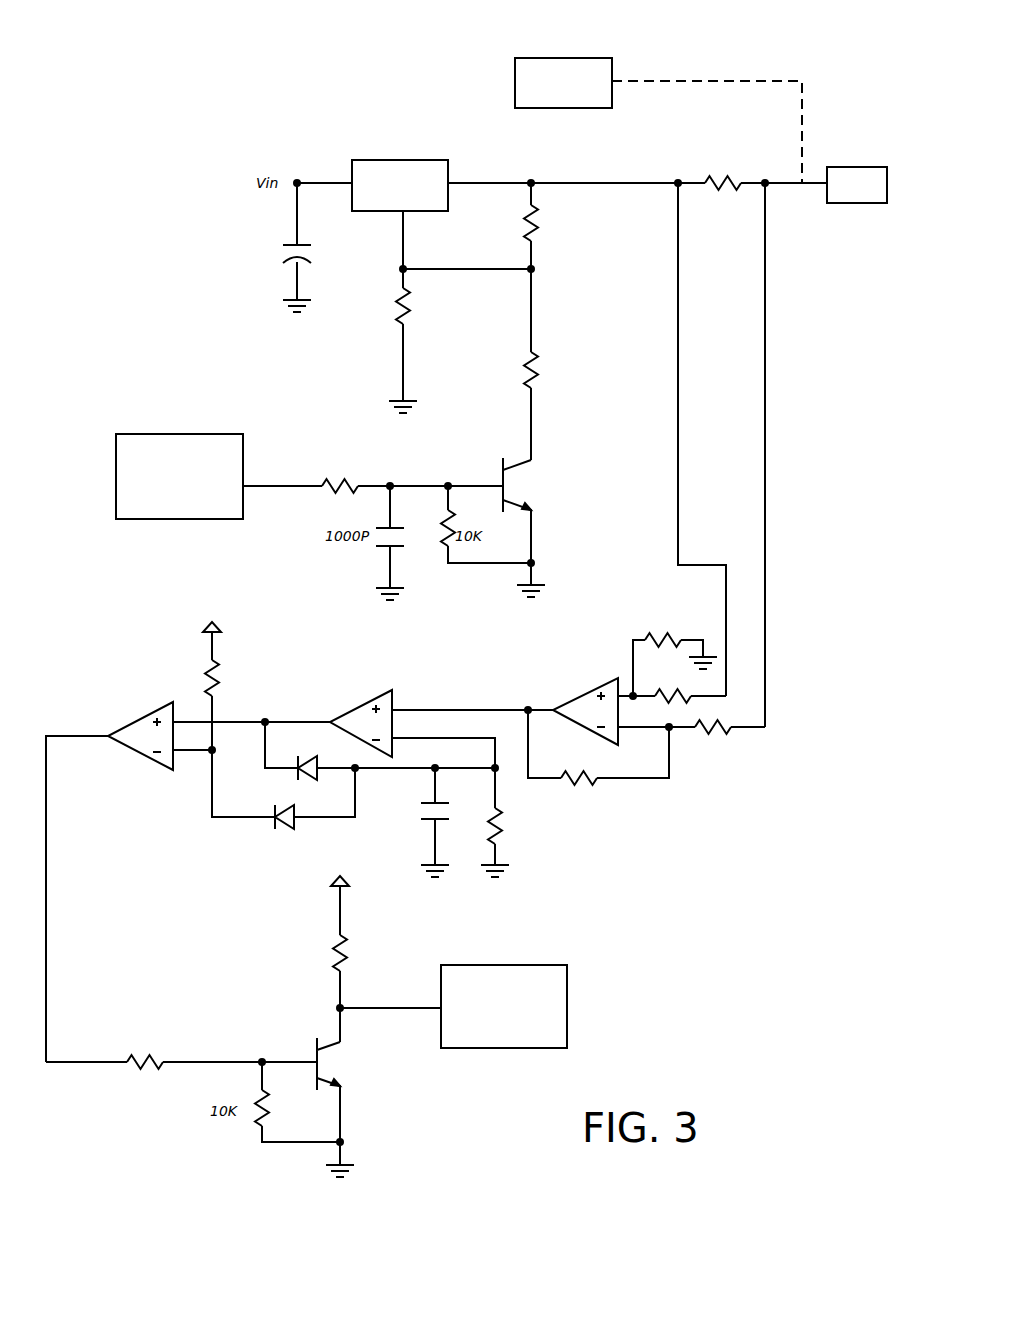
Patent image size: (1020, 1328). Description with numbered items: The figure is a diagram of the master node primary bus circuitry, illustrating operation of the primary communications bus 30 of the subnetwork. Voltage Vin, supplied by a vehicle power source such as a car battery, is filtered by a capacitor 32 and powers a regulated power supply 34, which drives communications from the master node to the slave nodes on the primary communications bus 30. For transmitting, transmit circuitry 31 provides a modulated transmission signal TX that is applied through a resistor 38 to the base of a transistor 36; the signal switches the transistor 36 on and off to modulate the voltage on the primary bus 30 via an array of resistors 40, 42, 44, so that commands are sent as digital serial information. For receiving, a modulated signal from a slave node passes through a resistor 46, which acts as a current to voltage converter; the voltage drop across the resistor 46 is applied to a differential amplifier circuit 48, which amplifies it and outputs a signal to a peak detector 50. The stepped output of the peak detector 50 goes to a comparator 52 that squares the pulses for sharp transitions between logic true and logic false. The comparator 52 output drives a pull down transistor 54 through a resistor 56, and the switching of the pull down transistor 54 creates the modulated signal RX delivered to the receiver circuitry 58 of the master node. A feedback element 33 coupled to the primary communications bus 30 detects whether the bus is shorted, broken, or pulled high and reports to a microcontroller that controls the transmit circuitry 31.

The primary communications bus/wire 30 is at (850, 162).
The transmit circuitry 31 is at (178, 520).
The capacitor 32 is at (313, 256).
The feedback element 33 is at (565, 58).
The regulated power supply 34 is at (393, 160).
The transistor 36 is at (502, 463).
The resistor 38 is at (323, 490).
The resistor 40 is at (535, 390).
The resistor 42 is at (535, 244).
The resistor 44 is at (408, 323).
The resistor 46 is at (706, 178).
The differential amplifier circuit 48 is at (588, 660).
The peak detector 50 is at (346, 694).
The comparator 52 is at (138, 702).
The pull down transistor 54 is at (313, 1052).
The resistor 56 is at (148, 1066).
The receiver circuitry 58 is at (496, 1048).